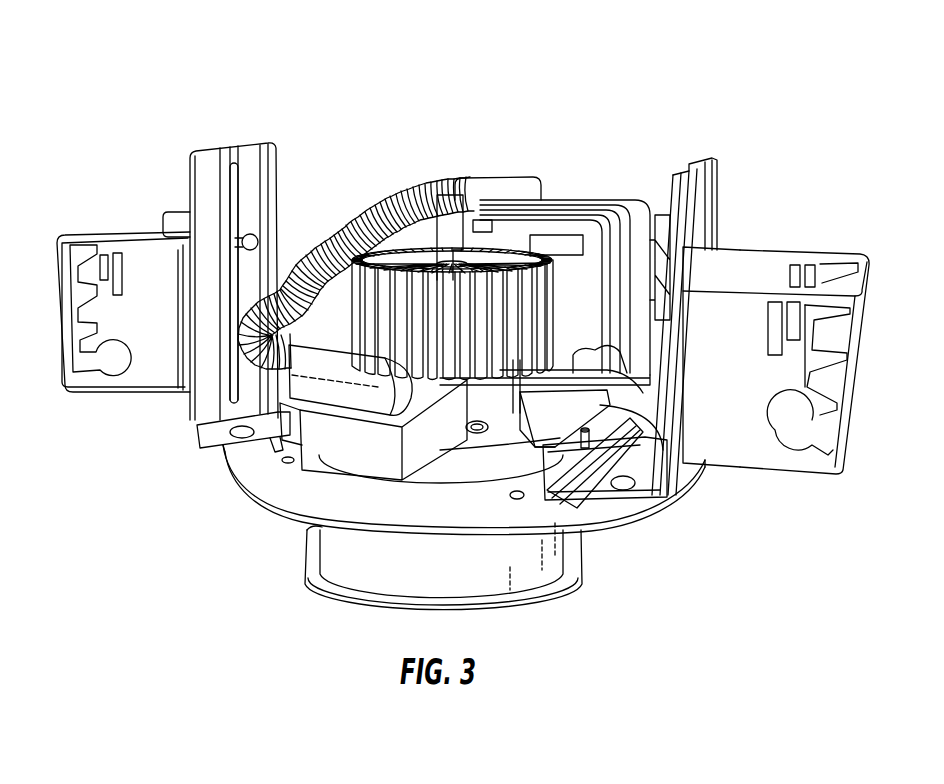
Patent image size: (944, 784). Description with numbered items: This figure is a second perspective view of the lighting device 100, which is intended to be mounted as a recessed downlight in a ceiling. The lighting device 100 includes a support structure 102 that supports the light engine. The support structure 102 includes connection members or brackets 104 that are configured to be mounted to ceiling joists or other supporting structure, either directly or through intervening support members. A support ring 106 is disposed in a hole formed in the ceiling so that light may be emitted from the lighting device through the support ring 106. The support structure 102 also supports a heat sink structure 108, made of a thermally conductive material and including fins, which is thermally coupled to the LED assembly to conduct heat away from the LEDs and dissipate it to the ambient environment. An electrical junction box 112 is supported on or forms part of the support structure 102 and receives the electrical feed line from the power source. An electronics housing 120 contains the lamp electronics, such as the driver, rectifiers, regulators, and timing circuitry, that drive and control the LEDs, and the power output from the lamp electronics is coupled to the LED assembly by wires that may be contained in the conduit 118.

The lighting device 100 is at (778, 118).
The support structure 102 is at (258, 452).
The connection members 104 is at (152, 367).
The support ring 106 is at (378, 566).
The heat sink structure 108 is at (357, 290).
The electrical junction box 112 is at (665, 213).
The conduit 118 is at (378, 205).
The electronics housing 120 is at (592, 272).